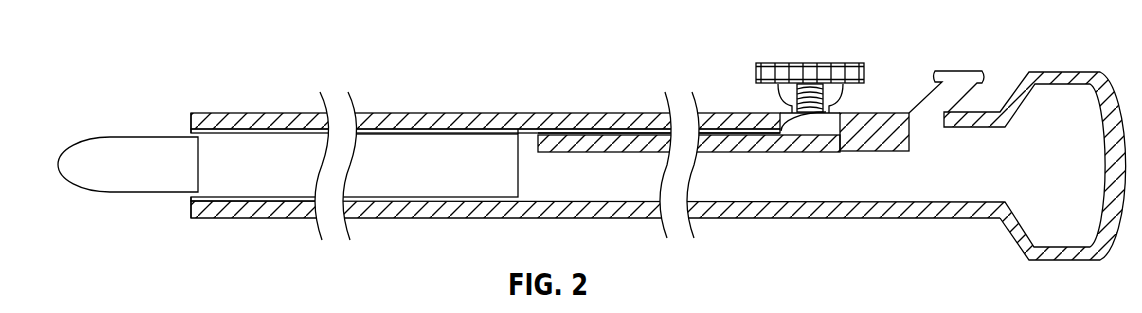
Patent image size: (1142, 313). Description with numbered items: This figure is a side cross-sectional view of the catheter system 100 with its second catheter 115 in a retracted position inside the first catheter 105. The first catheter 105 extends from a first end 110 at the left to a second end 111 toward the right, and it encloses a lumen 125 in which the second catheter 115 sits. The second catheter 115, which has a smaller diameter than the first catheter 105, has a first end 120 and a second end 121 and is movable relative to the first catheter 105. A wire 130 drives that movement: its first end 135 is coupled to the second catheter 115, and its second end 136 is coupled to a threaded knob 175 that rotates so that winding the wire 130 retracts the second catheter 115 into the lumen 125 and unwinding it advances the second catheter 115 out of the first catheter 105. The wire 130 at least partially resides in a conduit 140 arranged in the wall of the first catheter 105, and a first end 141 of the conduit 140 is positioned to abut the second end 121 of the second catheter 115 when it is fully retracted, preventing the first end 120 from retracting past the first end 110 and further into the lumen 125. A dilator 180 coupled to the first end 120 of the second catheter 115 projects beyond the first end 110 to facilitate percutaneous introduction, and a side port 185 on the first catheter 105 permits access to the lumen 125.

The catheter system 100 is at (101, 50).
The first catheter 105 is at (452, 112).
The first end of the first catheter 110 is at (187, 108).
The second end of the first catheter 111 is at (884, 98).
The second catheter 115 is at (300, 112).
The first end of the second catheter 120 is at (185, 200).
The second end of the second catheter 121 is at (530, 195).
The lumen 125 is at (442, 202).
The wire 130 is at (623, 132).
The first end of the wire 135 is at (518, 128).
The second end of the wire 136 is at (795, 97).
The conduit 140 is at (738, 128).
The first end of the conduit 141 is at (539, 137).
The threaded knob 175 is at (833, 68).
The dilator 180 is at (100, 136).
The side port 185 is at (960, 71).